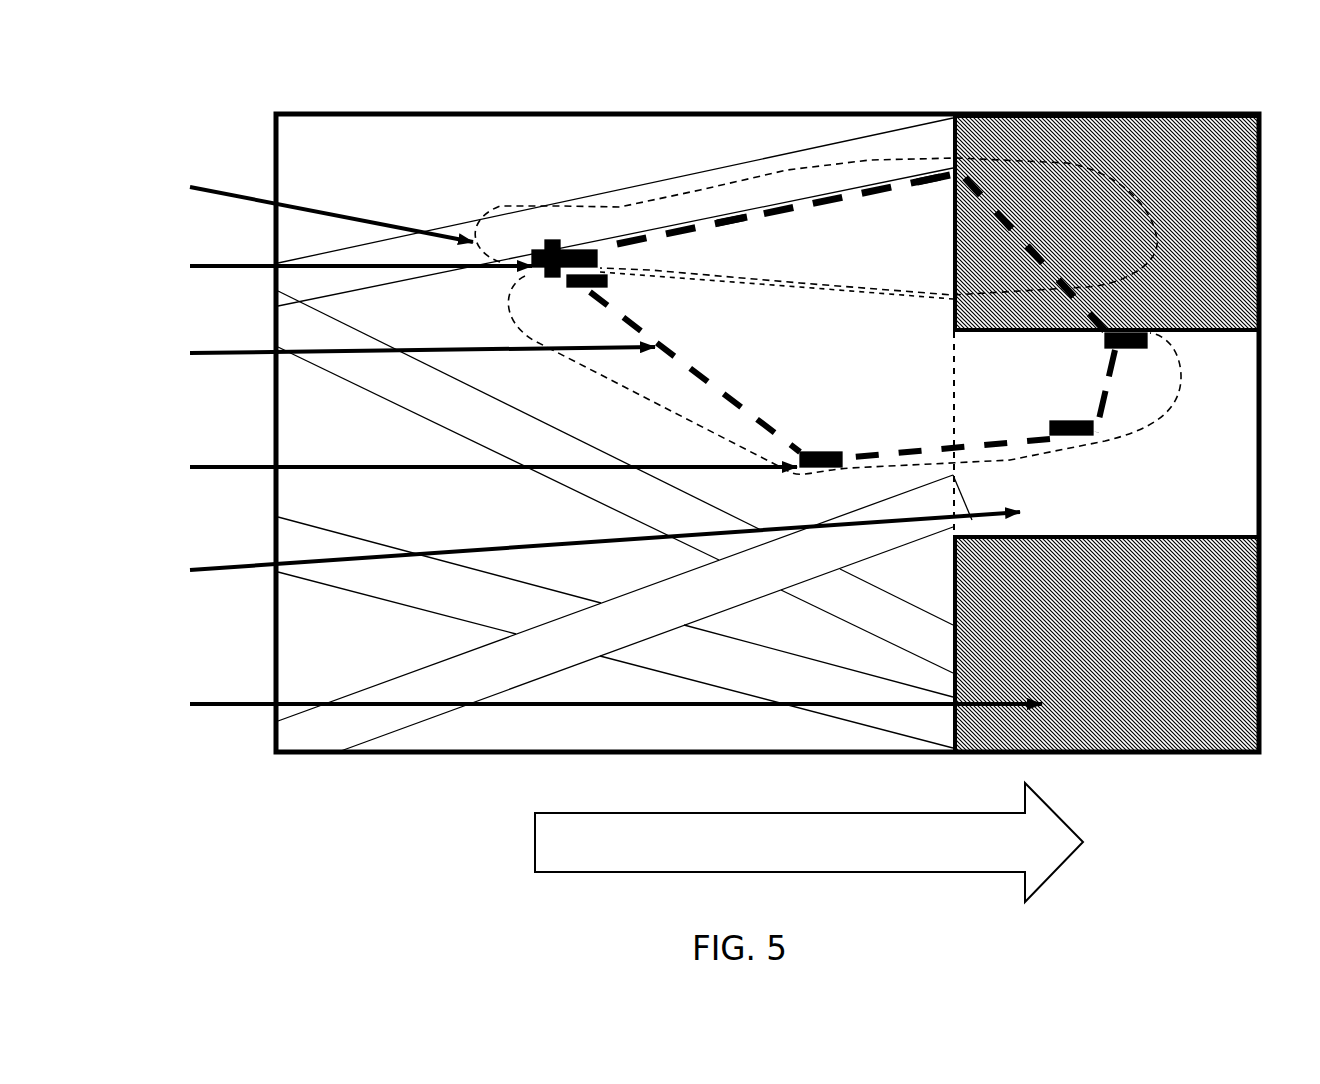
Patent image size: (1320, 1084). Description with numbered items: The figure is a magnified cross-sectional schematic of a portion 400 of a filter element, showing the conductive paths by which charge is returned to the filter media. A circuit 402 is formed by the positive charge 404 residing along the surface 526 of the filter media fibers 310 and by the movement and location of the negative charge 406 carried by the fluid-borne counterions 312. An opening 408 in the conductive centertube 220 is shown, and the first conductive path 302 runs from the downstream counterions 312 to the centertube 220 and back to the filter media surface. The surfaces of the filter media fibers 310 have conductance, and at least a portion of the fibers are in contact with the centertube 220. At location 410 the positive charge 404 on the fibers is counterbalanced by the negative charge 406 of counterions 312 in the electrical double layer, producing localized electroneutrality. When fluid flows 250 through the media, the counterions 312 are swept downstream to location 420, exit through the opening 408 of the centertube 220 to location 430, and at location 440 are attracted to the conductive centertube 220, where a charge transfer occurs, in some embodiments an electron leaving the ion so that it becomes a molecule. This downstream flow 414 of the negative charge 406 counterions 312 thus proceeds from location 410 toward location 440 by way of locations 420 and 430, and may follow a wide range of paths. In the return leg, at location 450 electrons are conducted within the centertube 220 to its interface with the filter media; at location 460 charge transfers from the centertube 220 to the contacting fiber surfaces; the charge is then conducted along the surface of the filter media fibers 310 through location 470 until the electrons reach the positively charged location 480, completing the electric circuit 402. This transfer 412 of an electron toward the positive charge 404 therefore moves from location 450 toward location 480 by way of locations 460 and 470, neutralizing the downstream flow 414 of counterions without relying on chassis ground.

The portion 400 is at (255, 105).
The surface 526 is at (927, 142).
The centertube 220 is at (699, 644).
The filter media fibers 310 is at (306, 205).
The positive charge 404 is at (338, 266).
The first conductive path 302 is at (400, 354).
The counterions 312 is at (471, 468).
The opening 408 is at (582, 552).
The transfer 412 is at (533, 205).
The negative charge 406 is at (623, 283).
The flow 414 is at (1137, 447).
The circuit 402 is at (793, 197).
The location 480 is at (543, 250).
The location 410 is at (563, 303).
The location 470 is at (761, 249).
The location 460 is at (941, 208).
The location 450 is at (1072, 243).
The location 440 is at (1163, 373).
The location 430 is at (1090, 460).
The location 420 is at (842, 445).
The fluid flow 250 is at (627, 858).